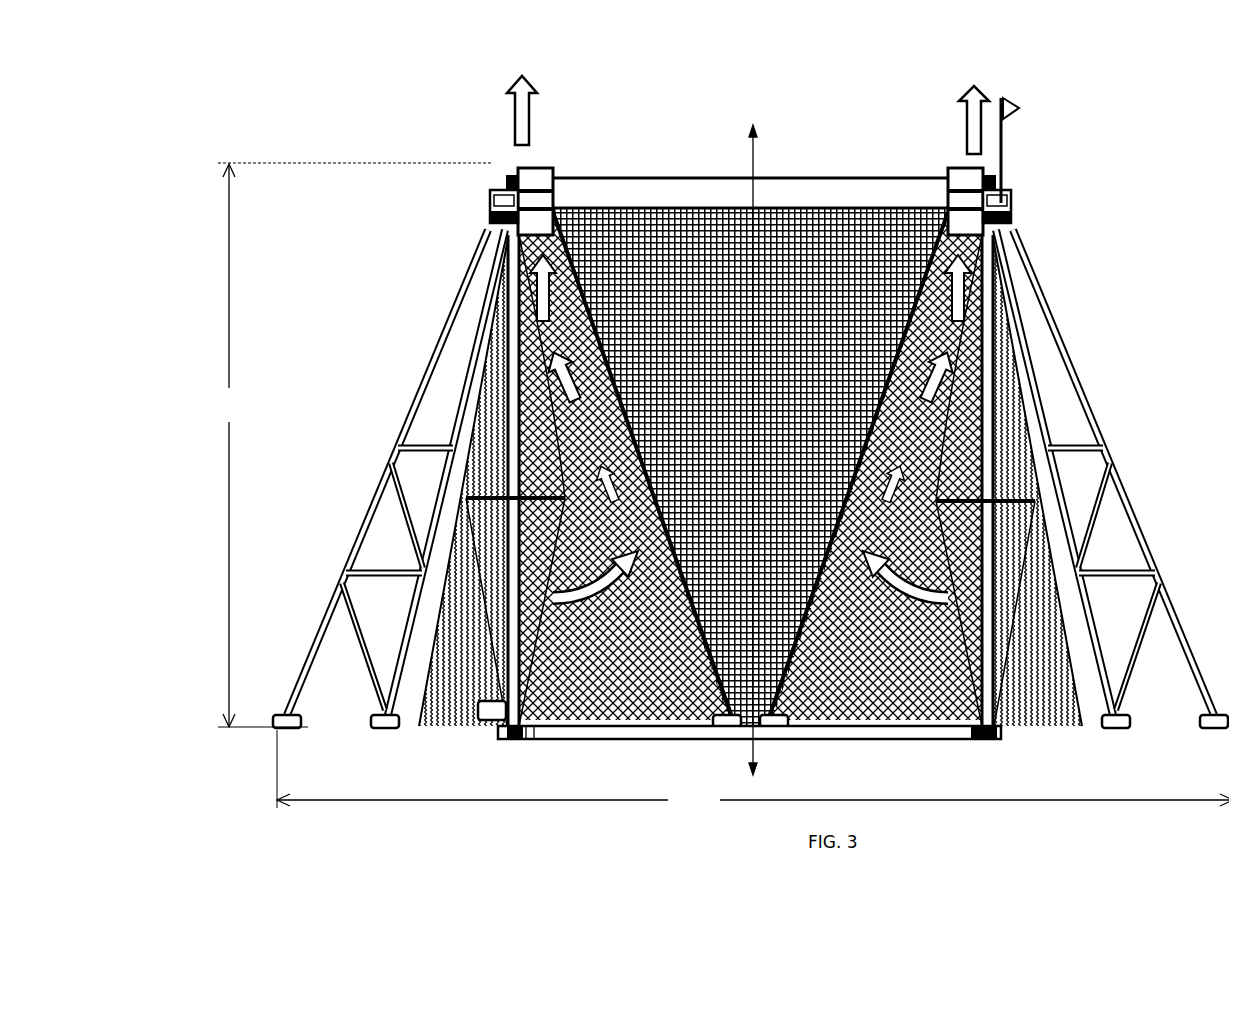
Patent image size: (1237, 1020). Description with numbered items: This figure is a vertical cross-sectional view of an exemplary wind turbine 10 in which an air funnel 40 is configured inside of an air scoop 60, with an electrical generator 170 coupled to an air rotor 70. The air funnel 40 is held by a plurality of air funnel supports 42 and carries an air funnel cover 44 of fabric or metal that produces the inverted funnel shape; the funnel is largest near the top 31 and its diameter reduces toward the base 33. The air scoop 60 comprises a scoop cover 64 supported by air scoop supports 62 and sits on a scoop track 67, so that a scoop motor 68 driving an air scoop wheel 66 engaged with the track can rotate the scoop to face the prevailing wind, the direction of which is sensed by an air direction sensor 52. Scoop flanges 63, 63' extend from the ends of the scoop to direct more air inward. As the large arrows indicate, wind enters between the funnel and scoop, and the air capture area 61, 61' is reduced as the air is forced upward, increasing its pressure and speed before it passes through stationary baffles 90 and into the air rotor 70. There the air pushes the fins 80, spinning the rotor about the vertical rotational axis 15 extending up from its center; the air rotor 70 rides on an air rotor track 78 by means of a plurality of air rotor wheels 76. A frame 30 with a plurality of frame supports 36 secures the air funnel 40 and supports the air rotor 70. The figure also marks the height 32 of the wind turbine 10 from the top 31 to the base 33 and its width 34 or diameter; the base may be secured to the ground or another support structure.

The wind turbine 10 is at (1028, 168).
The rotational axis 15 is at (745, 150).
The frame 30 is at (362, 520).
The top 31 is at (484, 190).
The height 32 is at (353, 445).
The base 33 is at (268, 722).
The width 34 is at (753, 770).
The frame supports 36 is at (398, 432).
The air funnel 40 is at (965, 420).
The air funnel supports 42 is at (980, 340).
The air funnel cover 44 is at (770, 714).
The air direction sensor 52 is at (1006, 98).
The air scoop 60 is at (612, 402).
The air capture area 61 is at (429, 481).
The air capture area 61' is at (1039, 434).
The air scoop supports 62 is at (535, 385).
The scoop flange 63 is at (418, 482).
The scoop flange 63' is at (1055, 503).
The scoop cover 64 is at (560, 665).
The air scoop wheel 66 is at (522, 733).
The scoop track 67 is at (505, 733).
The scoop motor 68 is at (478, 714).
The air rotor 70 is at (958, 176).
The air rotor wheels 76 is at (484, 205).
The air rotor track 78 is at (548, 182).
The fins 80 is at (527, 168).
The baffles 90 is at (492, 223).
The electrical generator 170 is at (503, 172).